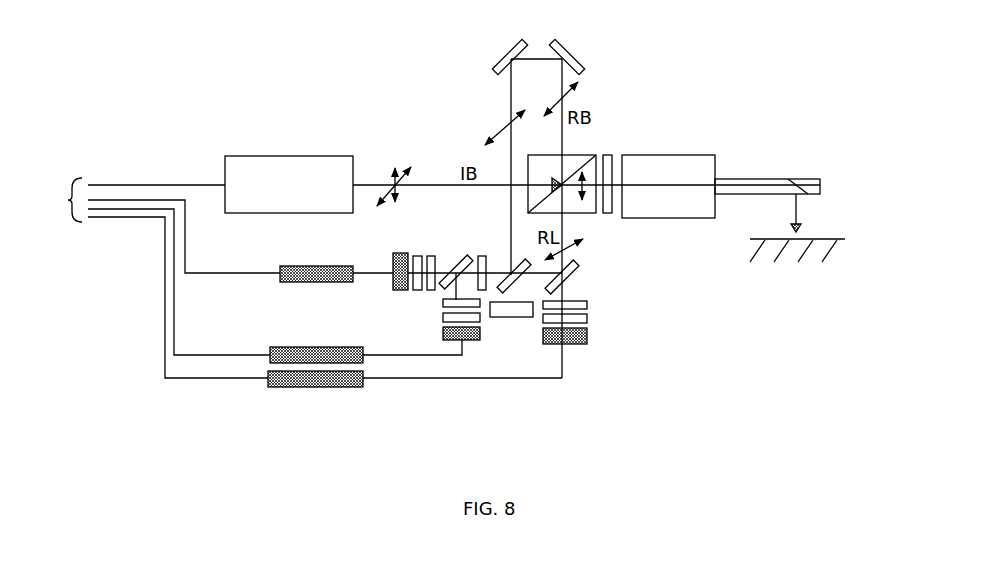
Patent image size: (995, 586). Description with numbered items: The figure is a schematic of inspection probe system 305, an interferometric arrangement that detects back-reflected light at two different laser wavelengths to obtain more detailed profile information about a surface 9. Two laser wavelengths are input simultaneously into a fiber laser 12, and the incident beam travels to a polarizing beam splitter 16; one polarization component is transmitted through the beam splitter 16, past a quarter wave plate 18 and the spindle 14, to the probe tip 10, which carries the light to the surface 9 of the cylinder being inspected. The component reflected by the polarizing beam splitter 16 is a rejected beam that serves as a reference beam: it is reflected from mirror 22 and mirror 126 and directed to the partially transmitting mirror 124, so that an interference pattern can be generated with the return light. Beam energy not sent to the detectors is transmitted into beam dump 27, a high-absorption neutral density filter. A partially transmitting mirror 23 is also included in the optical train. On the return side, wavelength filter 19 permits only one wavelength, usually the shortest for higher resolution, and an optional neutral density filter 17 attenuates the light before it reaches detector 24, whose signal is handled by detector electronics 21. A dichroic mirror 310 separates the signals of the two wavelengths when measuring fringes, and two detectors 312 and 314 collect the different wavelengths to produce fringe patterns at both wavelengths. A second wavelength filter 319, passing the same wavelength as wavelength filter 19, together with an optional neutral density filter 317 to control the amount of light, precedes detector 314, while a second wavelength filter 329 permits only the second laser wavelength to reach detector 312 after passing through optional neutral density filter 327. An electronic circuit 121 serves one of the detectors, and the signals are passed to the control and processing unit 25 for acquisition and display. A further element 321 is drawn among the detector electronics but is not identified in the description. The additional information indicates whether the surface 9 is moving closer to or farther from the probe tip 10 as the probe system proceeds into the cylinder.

The surface 9 is at (831, 227).
The probe tip 10 is at (750, 177).
The fiber laser 12 is at (277, 194).
The spindle 14 is at (653, 174).
The polarizing beam splitter 16 is at (551, 167).
The optional neutral density filter 17 is at (588, 318).
The quarter wave plate 18 is at (607, 216).
The wavelength filter 19 is at (588, 304).
The detector electronics 21 is at (270, 346).
The mirror 22 is at (573, 52).
The partially transmitting mirror 23 is at (580, 280).
The detector 24 is at (588, 338).
The control and processing unit 25 is at (157, 278).
The beam dump 27 is at (512, 320).
The electronic circuit 121 is at (331, 285).
The partially transmitting mirror 124 is at (509, 271).
The mirror 126 is at (496, 50).
The inspection probe system 305 is at (676, 94).
The dichroic mirror 310 is at (457, 253).
The detector 312 is at (392, 252).
The detector 314 is at (478, 343).
The optional neutral density filter 317 is at (442, 316).
The second wavelength filter 319 is at (442, 302).
The driver 321 is at (267, 385).
The optional neutral density filter 327 is at (416, 255).
The second wavelength filter 329 is at (431, 254).